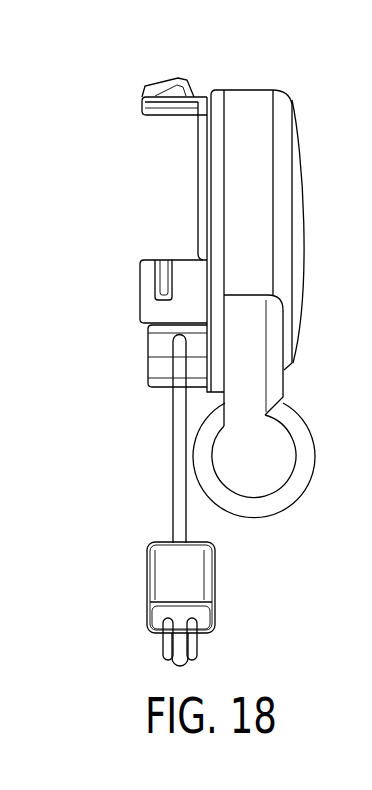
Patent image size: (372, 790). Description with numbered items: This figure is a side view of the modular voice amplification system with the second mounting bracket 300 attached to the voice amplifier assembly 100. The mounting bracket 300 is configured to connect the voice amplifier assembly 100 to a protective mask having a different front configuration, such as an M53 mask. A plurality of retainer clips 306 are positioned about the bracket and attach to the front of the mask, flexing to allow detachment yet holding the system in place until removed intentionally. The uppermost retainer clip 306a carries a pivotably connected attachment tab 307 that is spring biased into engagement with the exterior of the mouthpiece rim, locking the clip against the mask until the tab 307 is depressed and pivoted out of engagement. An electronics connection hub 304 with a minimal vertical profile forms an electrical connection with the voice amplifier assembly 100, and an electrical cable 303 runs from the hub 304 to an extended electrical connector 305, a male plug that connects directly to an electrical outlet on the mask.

The voice amplifier assembly 100 is at (284, 119).
The second mounting bracket 300 is at (198, 170).
The electrical cable 303 is at (178, 468).
The electronics connection hub 304 is at (155, 371).
The extended electrical connector 305 is at (198, 560).
The retainer clips 306 is at (150, 282).
The uppermost retainer clip 306a is at (148, 110).
The attachment tab 307 is at (181, 78).